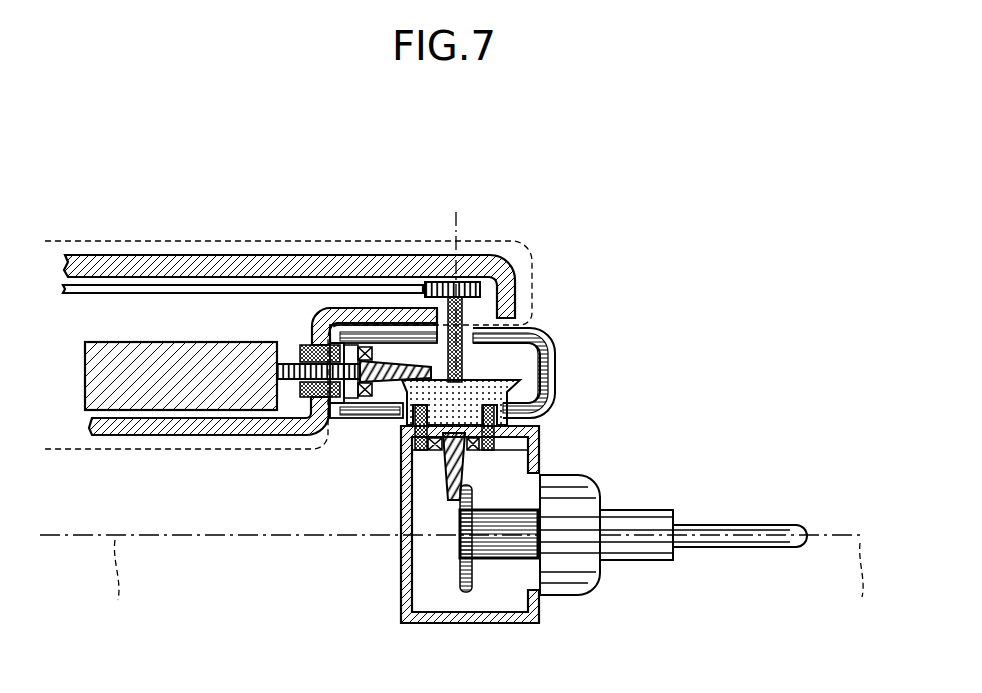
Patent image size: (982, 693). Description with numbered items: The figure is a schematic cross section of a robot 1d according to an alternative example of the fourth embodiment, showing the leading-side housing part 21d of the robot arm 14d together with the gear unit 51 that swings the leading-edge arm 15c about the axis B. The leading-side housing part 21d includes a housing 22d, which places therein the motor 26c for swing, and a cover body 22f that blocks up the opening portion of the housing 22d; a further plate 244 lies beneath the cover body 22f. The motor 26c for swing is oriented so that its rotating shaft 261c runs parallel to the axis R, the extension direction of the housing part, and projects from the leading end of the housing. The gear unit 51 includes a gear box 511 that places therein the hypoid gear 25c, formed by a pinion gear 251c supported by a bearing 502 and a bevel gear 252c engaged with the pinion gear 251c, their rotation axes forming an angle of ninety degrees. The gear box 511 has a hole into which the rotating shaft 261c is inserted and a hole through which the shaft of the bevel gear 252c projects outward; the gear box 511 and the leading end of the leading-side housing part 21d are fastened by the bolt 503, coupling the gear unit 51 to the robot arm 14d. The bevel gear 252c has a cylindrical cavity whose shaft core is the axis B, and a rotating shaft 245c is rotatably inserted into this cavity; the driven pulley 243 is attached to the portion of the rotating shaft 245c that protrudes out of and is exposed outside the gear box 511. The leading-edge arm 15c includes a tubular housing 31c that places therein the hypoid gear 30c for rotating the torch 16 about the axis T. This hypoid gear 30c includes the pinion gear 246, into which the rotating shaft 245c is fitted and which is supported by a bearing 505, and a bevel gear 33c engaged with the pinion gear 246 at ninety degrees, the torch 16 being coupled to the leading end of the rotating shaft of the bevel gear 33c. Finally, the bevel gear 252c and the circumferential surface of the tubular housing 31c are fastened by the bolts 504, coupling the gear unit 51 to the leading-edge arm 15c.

The robot 1d is at (645, 186).
The robot arm 14d is at (186, 153).
The leading-edge arm 15c is at (227, 568).
The torch 16 is at (757, 522).
The leading-side housing part 21d is at (72, 241).
The cover body 22f is at (147, 255).
The housing 22d is at (108, 436).
The plate member 244 is at (232, 285).
The driven pulley 243 is at (432, 282).
The rotating shaft 245c is at (463, 311).
The pinion gear 246 is at (446, 486).
The hypoid gear 25c is at (669, 317).
The pinion gear 251c is at (433, 368).
The bevel gear 252c is at (504, 387).
The motor for swing 26c is at (140, 410).
The rotating shaft 261c is at (296, 364).
The hypoid gear 30c is at (316, 508).
The tubular housing 31c is at (538, 617).
The bevel gear 33c is at (461, 556).
The bearing 502 is at (366, 347).
The bolt 503 is at (306, 345).
The bolts 504 is at (418, 440).
The bearing 505 is at (438, 450).
The gear unit 51 is at (604, 304).
The gear box 511 is at (533, 328).
The axis B is at (462, 222).
The axis R is at (116, 583).
The axis T is at (860, 584).